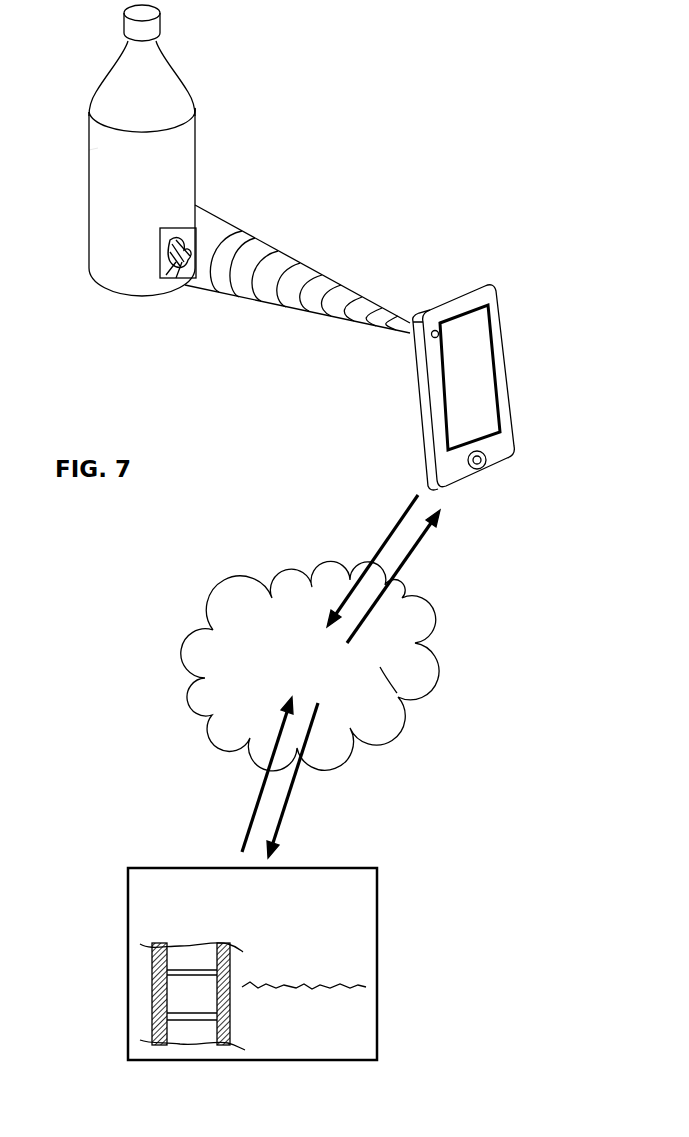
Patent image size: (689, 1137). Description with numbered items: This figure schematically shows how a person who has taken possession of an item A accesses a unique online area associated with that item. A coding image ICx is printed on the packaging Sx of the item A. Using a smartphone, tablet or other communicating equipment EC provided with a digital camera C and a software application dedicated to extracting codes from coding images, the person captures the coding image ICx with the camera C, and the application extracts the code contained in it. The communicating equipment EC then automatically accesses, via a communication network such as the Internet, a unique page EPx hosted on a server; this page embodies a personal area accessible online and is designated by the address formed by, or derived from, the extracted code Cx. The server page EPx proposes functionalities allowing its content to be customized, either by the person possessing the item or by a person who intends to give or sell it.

The item A is at (172, 85).
The packaging of the item Sx is at (102, 150).
The coding image ICx is at (172, 279).
The digital camera C is at (434, 320).
The communicating equipment EC is at (488, 373).
The extracted code Cx is at (336, 676).
The unique page EPx is at (252, 964).